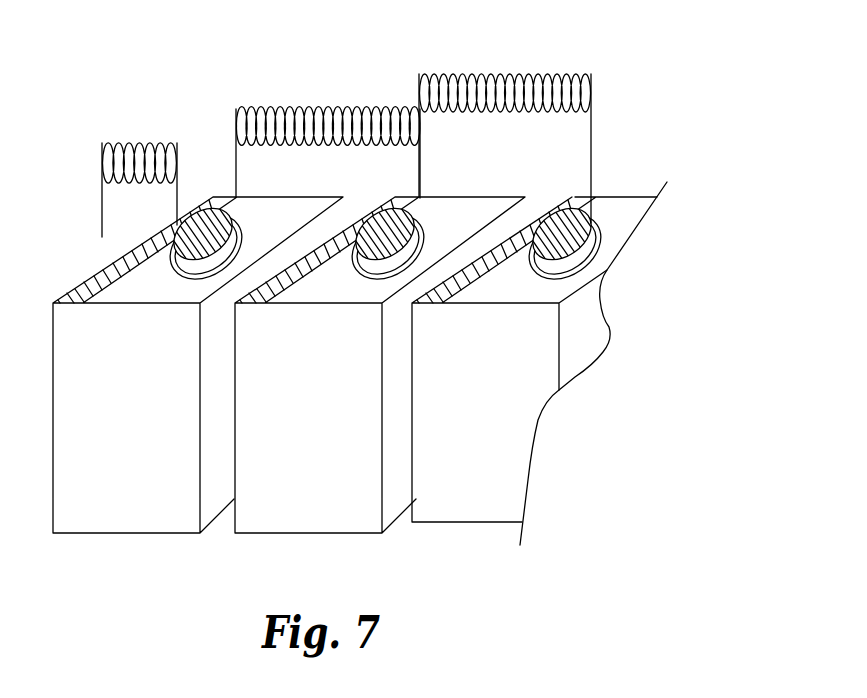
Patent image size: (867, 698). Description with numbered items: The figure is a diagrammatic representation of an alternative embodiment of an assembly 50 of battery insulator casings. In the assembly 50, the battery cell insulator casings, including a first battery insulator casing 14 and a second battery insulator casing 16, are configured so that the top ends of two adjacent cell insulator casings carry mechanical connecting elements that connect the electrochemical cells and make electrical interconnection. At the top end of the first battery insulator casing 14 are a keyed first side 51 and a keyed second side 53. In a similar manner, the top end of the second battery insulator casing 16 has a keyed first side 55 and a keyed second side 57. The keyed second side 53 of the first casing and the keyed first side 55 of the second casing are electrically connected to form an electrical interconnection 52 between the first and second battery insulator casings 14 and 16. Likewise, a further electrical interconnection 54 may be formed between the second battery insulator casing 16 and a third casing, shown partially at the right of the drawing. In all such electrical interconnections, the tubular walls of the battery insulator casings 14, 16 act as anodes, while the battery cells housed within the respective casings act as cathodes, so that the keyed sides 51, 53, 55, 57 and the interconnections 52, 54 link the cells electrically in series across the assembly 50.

The first battery insulator casing 14 is at (84, 512).
The second battery insulator casing 16 is at (249, 517).
The assembly of battery insulator casings 50 is at (654, 126).
The keyed first side 51 is at (210, 197).
The electrical interconnection 52 is at (299, 110).
The keyed second side 53 is at (320, 214).
The electrical interconnection 54 is at (536, 74).
The keyed first side 55 is at (395, 210).
The keyed second side 57 is at (500, 213).